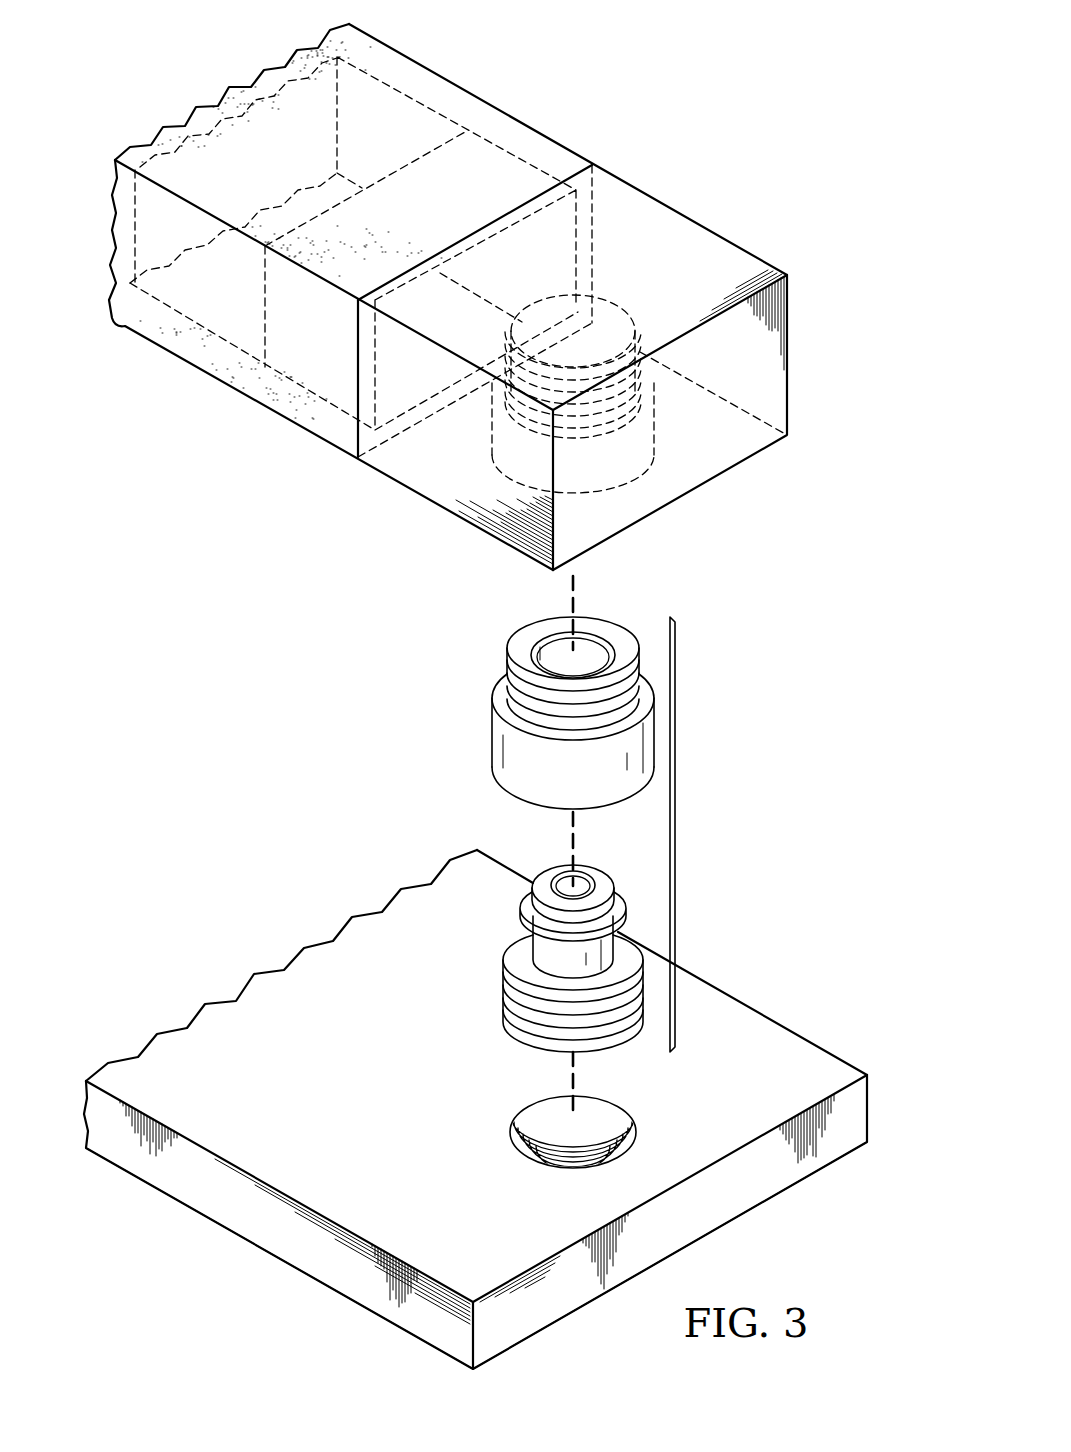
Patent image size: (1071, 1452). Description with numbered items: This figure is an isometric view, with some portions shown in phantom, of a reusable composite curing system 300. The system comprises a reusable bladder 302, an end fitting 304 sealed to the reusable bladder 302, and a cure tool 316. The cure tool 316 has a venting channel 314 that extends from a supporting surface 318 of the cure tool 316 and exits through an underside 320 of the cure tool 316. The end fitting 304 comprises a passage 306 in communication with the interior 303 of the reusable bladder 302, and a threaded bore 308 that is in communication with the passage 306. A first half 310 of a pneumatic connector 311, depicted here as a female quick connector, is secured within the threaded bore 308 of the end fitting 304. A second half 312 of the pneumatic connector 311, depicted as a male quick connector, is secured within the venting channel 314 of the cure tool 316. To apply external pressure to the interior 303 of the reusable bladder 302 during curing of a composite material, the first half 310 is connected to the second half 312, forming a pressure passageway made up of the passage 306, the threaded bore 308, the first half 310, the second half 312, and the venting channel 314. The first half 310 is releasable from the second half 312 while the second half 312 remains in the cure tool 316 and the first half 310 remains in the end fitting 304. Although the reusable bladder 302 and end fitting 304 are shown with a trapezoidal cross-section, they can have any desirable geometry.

The reusable composite curing system 300 is at (762, 60).
The reusable bladder 302 is at (452, 96).
The interior 303 is at (204, 330).
The end fitting 304 is at (683, 232).
The passage 306 is at (519, 298).
The threaded bore 308 is at (619, 303).
The first half of pneumatic connector 310 is at (491, 728).
The pneumatic connector 311 is at (677, 832).
The second half of pneumatic connector 312 is at (519, 1040).
The venting channel 314 is at (608, 1124).
The cure tool 316 is at (475, 1109).
The supporting surface 318 is at (800, 1050).
The underside 320 is at (225, 1229).